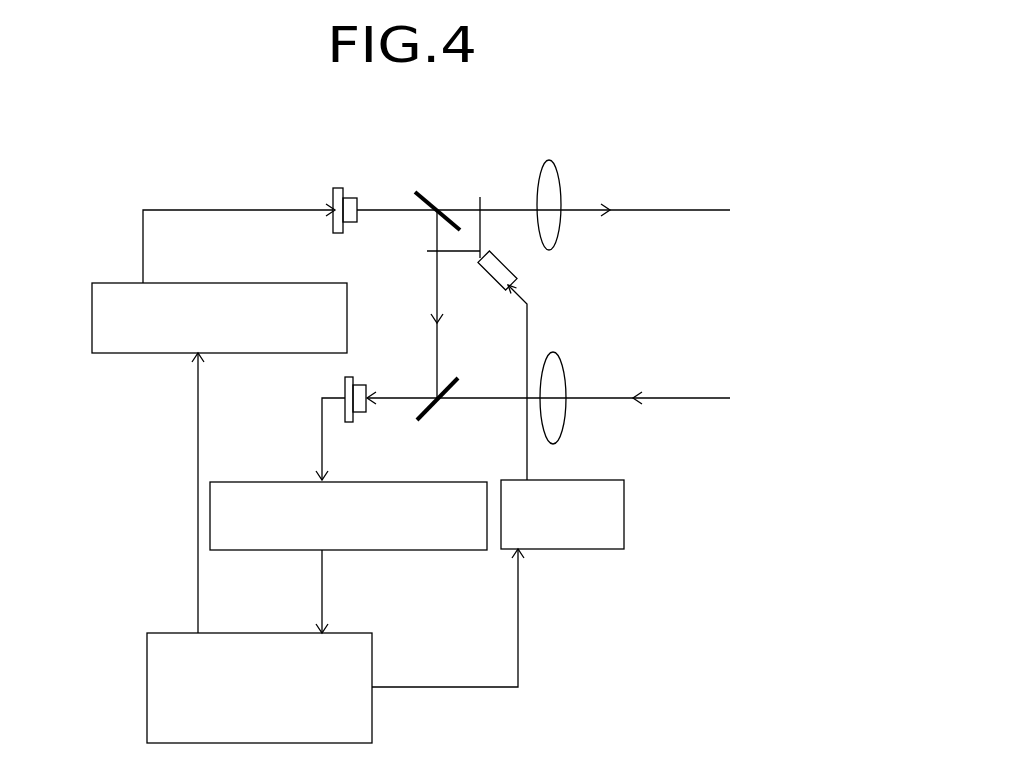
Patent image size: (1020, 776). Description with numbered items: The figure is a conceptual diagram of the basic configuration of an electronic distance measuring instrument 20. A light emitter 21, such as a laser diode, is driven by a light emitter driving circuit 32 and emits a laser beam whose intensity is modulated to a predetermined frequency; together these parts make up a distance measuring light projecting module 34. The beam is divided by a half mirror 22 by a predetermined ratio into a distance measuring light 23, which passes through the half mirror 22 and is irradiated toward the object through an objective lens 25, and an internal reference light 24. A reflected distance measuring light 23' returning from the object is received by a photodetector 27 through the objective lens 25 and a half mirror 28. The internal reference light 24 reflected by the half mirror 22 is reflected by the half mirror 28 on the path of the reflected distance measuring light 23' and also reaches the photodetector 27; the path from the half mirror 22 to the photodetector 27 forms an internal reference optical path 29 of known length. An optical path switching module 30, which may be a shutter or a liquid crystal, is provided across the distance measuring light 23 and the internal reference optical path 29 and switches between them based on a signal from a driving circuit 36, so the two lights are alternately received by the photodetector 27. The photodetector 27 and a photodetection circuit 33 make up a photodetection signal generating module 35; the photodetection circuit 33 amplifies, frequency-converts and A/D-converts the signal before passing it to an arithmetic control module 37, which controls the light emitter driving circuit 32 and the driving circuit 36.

The electronic distance measuring instrument 20 is at (125, 108).
The light emitter 21 is at (350, 198).
The half mirror 22 is at (432, 205).
The distance measuring light 23 is at (543, 166).
The reflected distance measuring light 23' is at (548, 365).
The internal reference light 24 is at (437, 283).
The objective lens 25 is at (561, 187).
The photodetector 27 is at (360, 385).
The half mirror 28 is at (452, 378).
The internal reference optical path 29 is at (418, 266).
The optical path switching module 30 is at (500, 258).
The light emitter driving circuit 32 is at (108, 282).
The photodetection circuit 33 is at (277, 480).
The distance measuring light projecting module 34 is at (213, 175).
The photodetection signal generating module 35 is at (305, 432).
The driving circuit 36 is at (553, 550).
The arithmetic control module 37 is at (373, 663).